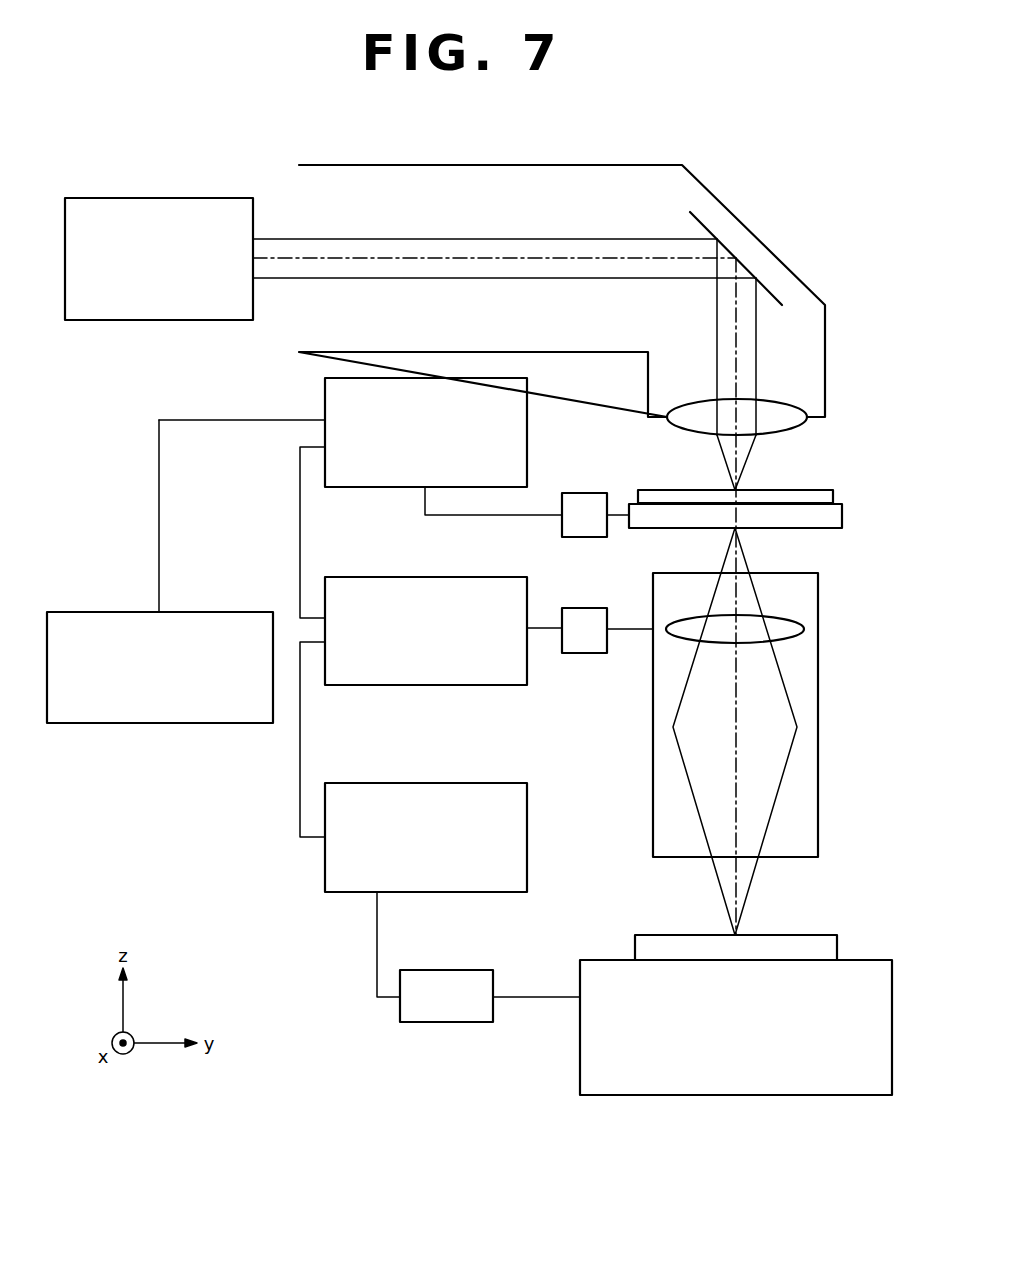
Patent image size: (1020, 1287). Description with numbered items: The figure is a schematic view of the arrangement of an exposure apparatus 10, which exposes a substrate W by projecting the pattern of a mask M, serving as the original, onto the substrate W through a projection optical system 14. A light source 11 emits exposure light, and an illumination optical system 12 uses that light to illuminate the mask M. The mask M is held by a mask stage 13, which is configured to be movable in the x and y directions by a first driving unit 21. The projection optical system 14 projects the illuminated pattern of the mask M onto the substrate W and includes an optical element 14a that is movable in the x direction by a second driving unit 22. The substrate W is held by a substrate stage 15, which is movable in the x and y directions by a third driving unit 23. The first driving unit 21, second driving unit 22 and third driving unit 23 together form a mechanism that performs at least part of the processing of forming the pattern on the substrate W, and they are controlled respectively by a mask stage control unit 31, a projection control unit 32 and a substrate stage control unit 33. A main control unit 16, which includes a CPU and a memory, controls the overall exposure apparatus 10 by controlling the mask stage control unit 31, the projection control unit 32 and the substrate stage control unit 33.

The exposure apparatus 10 is at (792, 152).
The light source 11 is at (160, 196).
The illumination optical system 12 is at (525, 163).
The mask stage 13 is at (843, 510).
The projection optical system 14 is at (771, 731).
The optical element 14a is at (805, 629).
The substrate stage 15 is at (737, 1097).
The main control unit 16 is at (117, 610).
The first driving unit 21 is at (582, 491).
The second driving unit 22 is at (583, 606).
The third driving unit 23 is at (447, 968).
The mask stage control unit 31 is at (529, 406).
The projection control unit 32 is at (426, 575).
The substrate stage control unit 33 is at (427, 781).
The mask M is at (813, 482).
The substrate W is at (805, 932).